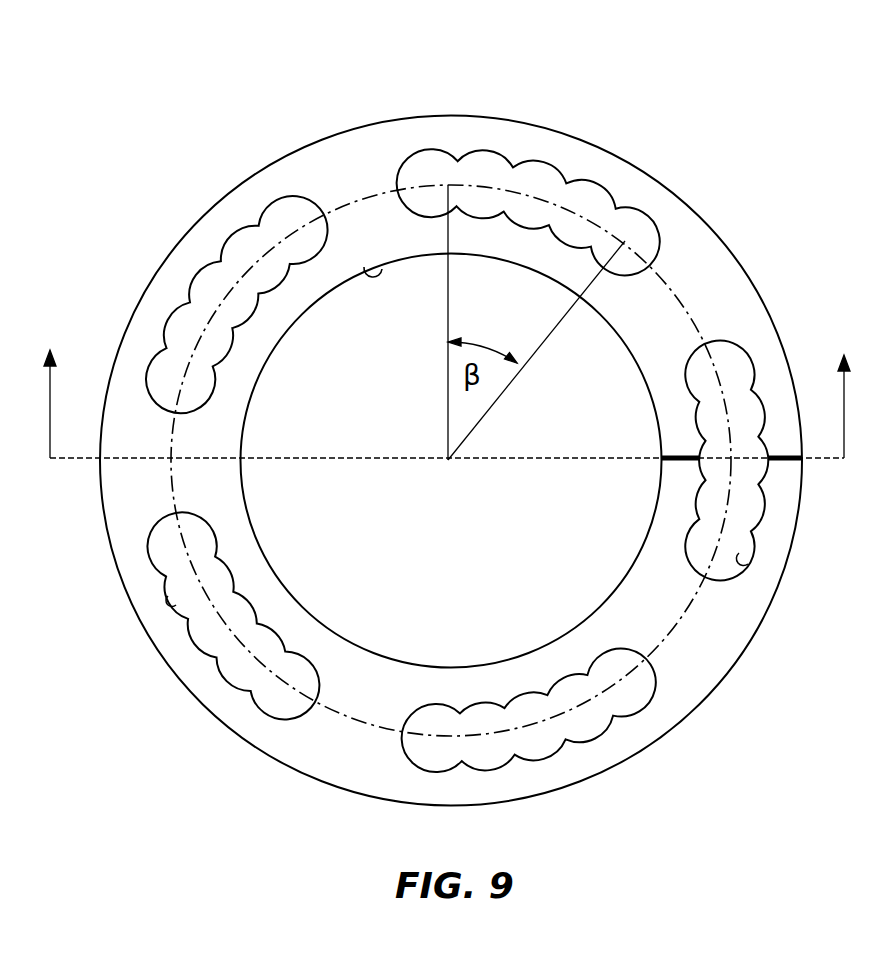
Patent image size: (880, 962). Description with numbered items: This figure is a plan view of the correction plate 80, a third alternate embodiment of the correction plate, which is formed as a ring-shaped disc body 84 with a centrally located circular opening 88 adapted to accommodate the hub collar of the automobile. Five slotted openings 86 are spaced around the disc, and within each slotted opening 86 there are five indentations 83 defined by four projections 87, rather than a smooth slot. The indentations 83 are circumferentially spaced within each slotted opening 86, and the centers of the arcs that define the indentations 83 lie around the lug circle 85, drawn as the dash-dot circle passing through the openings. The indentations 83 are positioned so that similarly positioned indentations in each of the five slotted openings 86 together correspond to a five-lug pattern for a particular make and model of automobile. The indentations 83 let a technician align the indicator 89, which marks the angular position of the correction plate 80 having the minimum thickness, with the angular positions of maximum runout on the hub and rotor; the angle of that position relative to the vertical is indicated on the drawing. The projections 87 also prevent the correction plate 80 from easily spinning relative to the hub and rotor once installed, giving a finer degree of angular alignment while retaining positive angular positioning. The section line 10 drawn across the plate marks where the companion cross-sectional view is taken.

The correction plate 80 is at (655, 120).
The indentations 83 is at (462, 761).
The plate body 84 is at (483, 461).
The lug circle 85 is at (650, 270).
The slotted openings 86 is at (744, 560).
The projections 87 is at (547, 695).
The opening 88 is at (380, 270).
The indicator 89 is at (769, 461).
The section line 10 is at (450, 425).